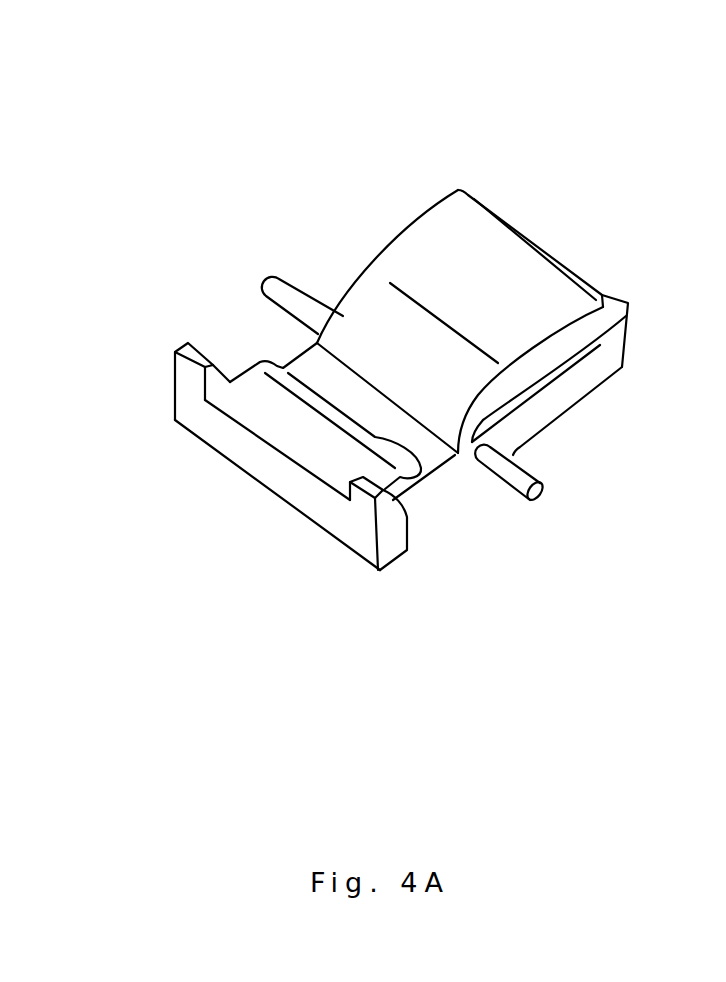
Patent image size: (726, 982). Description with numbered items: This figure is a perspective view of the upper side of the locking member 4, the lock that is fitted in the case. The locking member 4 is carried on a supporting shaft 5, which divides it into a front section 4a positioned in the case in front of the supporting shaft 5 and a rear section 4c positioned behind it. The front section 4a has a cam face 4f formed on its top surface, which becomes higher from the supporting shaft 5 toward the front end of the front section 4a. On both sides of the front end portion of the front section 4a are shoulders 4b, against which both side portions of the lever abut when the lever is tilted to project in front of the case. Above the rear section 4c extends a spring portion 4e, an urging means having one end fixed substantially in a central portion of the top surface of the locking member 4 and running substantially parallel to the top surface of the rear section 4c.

The locking member 4 is at (392, 147).
The front section 4a is at (310, 450).
The shoulders 4b is at (185, 340).
The rear section 4c is at (612, 308).
The spring portion 4e is at (483, 230).
The cam face 4f is at (437, 455).
The supporting shaft 5 is at (533, 473).